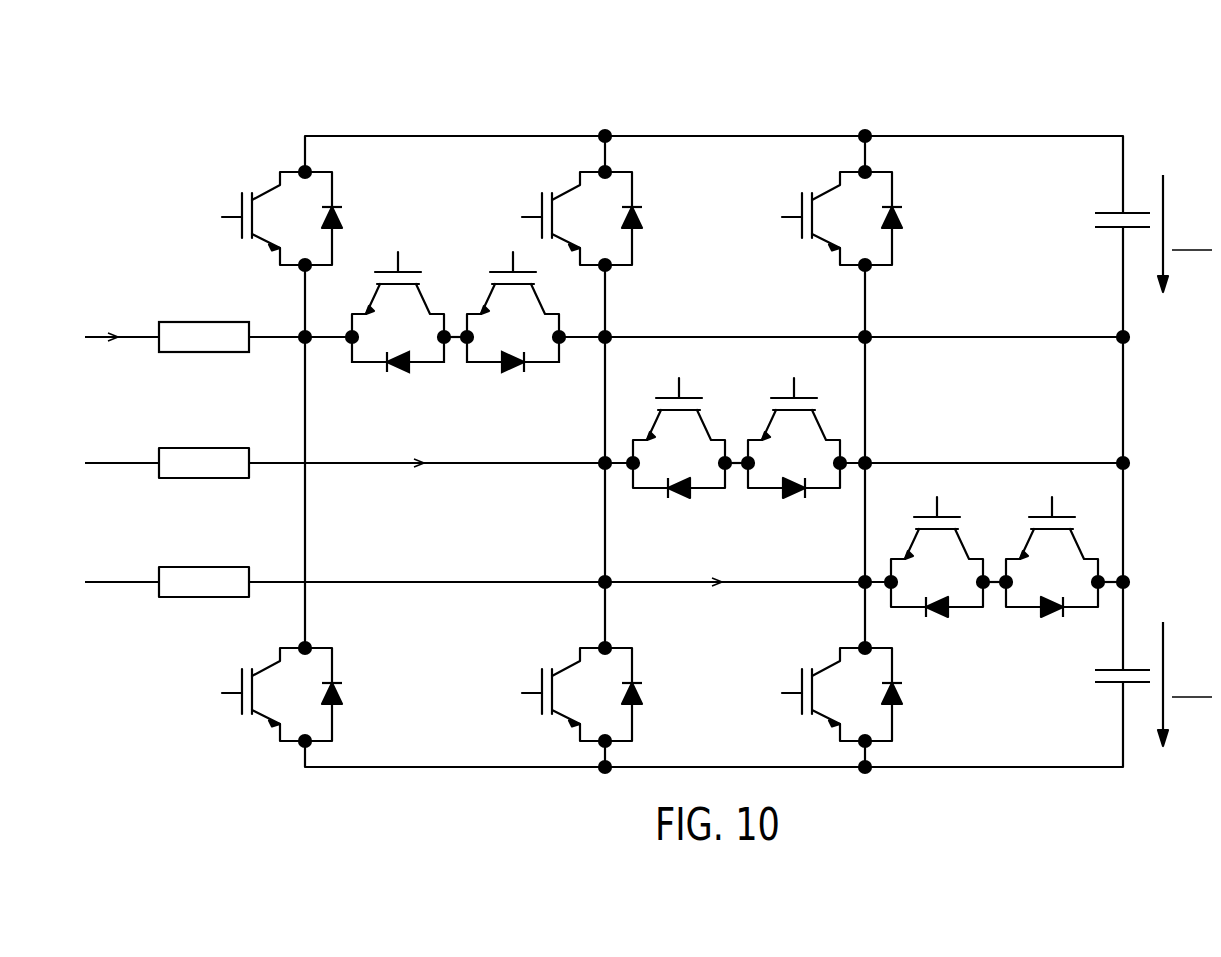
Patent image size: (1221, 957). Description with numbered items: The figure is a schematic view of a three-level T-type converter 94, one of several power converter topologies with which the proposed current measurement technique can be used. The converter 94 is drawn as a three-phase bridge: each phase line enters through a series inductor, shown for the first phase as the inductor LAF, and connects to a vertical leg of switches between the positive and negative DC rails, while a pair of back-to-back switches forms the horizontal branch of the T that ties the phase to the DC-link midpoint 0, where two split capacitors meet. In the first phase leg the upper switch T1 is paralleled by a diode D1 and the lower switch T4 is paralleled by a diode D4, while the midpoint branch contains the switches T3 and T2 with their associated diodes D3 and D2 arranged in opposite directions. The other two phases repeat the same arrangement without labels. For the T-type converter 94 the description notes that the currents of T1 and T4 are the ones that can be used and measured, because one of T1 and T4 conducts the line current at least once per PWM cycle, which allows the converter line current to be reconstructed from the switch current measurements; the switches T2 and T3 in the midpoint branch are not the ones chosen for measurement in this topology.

The three-level T-type converter 94 is at (1032, 108).
The switch T1 is at (252, 218).
The switch T2 is at (513, 286).
The switch T3 is at (398, 286).
The switch T4 is at (252, 694).
The freewheeling diode D1 is at (338, 218).
The diode D2 is at (513, 371).
The diode D3 is at (398, 371).
The freewheeling diode D4 is at (339, 694).
The DC link midpoint (neutral) 0 is at (1130, 463).
The filter inductor LAF is at (204, 321).